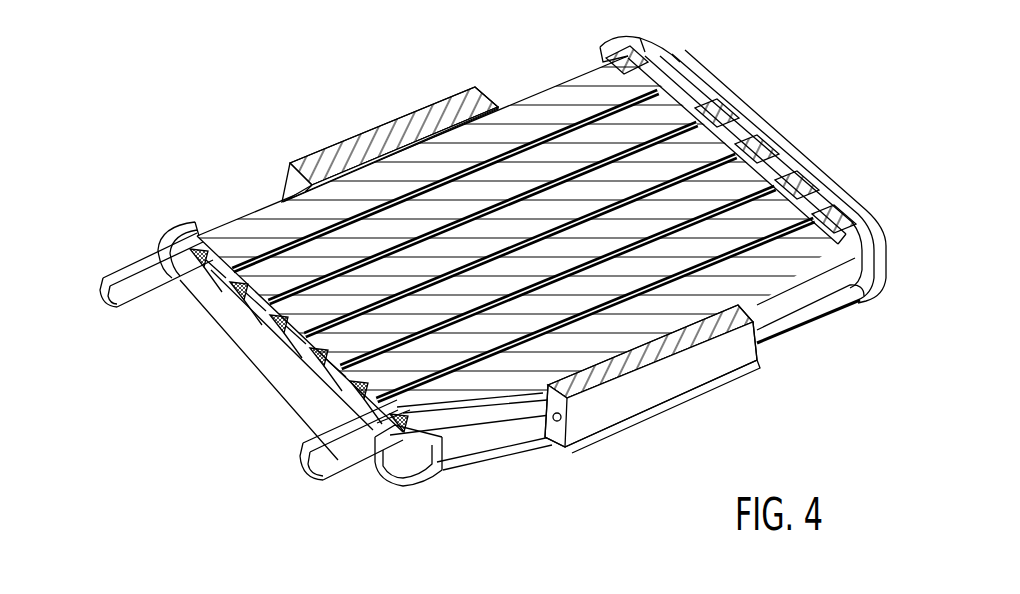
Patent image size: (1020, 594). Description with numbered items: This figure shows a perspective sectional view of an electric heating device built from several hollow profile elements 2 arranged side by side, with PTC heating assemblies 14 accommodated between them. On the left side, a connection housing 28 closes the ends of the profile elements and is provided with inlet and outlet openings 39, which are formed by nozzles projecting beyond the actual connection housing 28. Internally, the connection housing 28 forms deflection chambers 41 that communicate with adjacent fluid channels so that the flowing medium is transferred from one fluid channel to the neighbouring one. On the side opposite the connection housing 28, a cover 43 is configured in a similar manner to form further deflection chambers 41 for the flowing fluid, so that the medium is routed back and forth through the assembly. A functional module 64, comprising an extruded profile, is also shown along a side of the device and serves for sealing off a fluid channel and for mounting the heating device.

The hollow profile element 2 is at (188, 265).
The PTC heating assembly 14 is at (666, 81).
The connection housing 28 is at (401, 499).
The inlet and outlet openings 39 is at (106, 310).
The deflection chamber 41 is at (332, 393).
The cover 43 is at (892, 244).
The functional module 64 is at (767, 370).